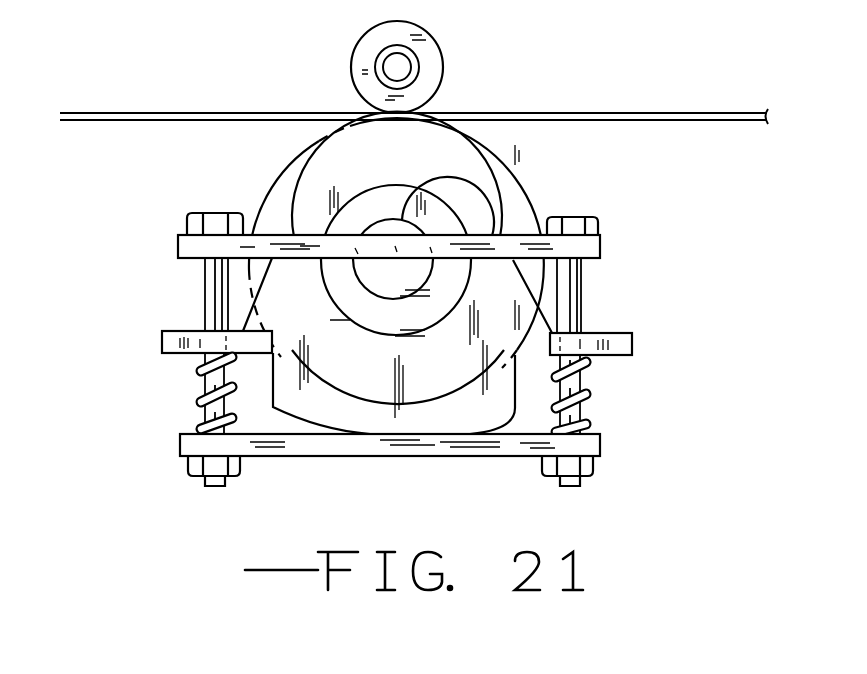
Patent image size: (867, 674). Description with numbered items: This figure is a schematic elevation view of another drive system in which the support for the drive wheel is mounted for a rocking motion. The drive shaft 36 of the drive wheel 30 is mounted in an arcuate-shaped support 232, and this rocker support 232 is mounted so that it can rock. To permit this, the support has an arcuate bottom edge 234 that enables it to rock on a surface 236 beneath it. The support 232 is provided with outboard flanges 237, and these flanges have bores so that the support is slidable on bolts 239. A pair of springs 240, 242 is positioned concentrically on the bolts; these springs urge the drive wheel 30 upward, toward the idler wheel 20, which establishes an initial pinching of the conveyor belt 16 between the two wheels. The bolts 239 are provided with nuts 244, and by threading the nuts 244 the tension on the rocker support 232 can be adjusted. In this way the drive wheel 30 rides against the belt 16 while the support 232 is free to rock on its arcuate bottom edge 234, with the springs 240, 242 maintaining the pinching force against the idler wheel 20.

The conveyor belt 16 is at (611, 113).
The idler wheel 20 is at (437, 46).
The drive wheel 30 is at (533, 202).
The drive shaft 36 is at (452, 178).
The arcuate-shaped support 232 is at (260, 173).
The arcuate bottom edge 234 is at (492, 417).
The surface 236 is at (262, 433).
The outboard flanges 237 is at (177, 331).
The bolts 239 is at (205, 287).
The spring 240 is at (203, 397).
The spring 242 is at (583, 388).
The nuts 244 is at (183, 463).